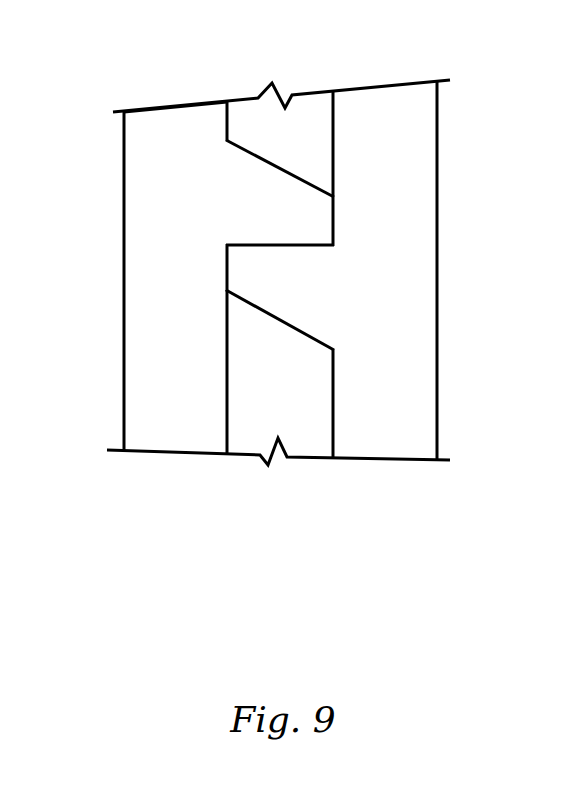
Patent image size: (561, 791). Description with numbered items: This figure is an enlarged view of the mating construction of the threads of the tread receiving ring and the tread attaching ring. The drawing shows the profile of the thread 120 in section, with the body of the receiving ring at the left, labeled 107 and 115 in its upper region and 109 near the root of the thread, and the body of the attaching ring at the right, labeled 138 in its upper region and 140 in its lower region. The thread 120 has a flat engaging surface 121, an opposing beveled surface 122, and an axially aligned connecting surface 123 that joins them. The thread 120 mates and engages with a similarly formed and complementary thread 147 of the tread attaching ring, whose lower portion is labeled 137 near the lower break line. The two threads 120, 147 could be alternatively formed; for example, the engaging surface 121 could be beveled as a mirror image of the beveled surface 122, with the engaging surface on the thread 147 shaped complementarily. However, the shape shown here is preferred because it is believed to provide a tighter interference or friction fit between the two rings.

The first member 107 is at (123, 165).
The notch wall 109 is at (227, 120).
The upper portion 115 is at (177, 157).
The thread 120 is at (277, 202).
The flat engaging surface 121 is at (258, 244).
The beveled surface 122 is at (275, 160).
The axially aligned connecting surface 123 is at (307, 220).
The lower tongue 137 is at (332, 398).
The second member 138 is at (439, 162).
The lower portion 140 is at (412, 370).
The thread 147 is at (302, 277).